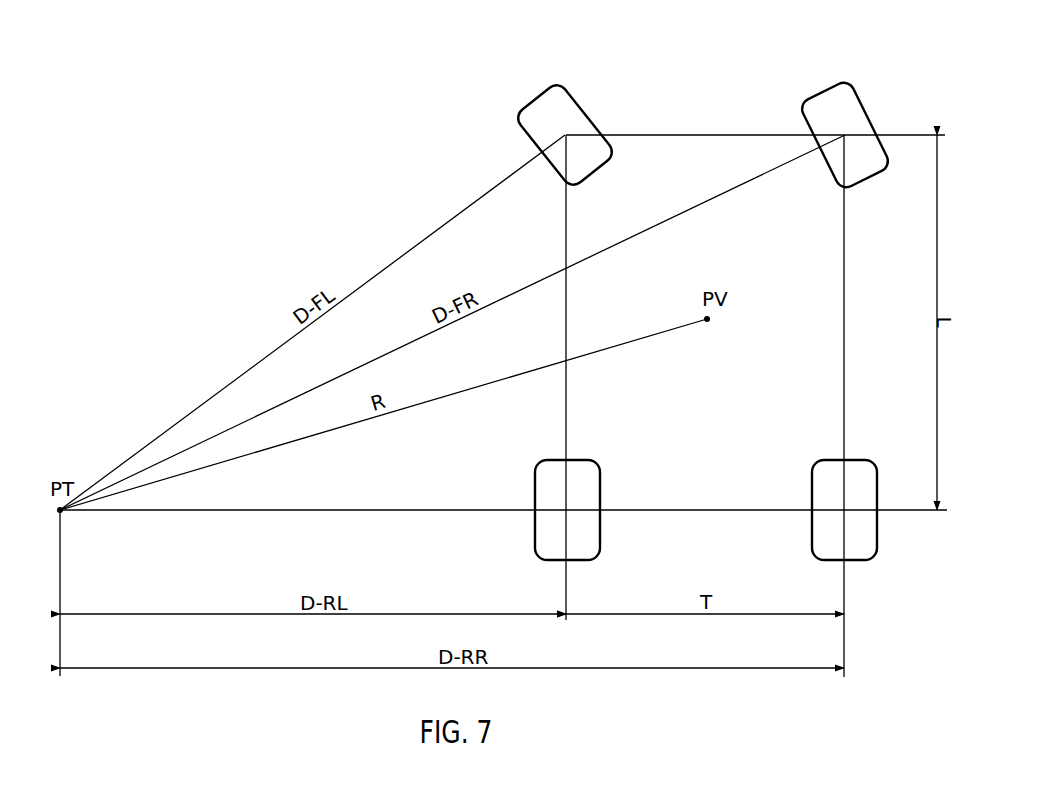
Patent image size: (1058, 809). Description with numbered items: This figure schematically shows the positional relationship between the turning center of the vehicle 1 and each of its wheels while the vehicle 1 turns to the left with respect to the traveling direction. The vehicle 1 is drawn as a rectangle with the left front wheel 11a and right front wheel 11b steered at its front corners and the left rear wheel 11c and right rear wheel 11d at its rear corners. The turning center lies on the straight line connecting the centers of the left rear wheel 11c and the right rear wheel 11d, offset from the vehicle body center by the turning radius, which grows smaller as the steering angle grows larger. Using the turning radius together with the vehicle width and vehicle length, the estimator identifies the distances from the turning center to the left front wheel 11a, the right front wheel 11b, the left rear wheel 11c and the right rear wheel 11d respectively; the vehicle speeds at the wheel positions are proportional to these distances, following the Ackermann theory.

The vehicle 1 is at (702, 135).
The left front wheel 11a is at (537, 93).
The right front wheel 11b is at (823, 88).
The left rear wheel 11c is at (535, 527).
The right rear wheel 11d is at (812, 527).